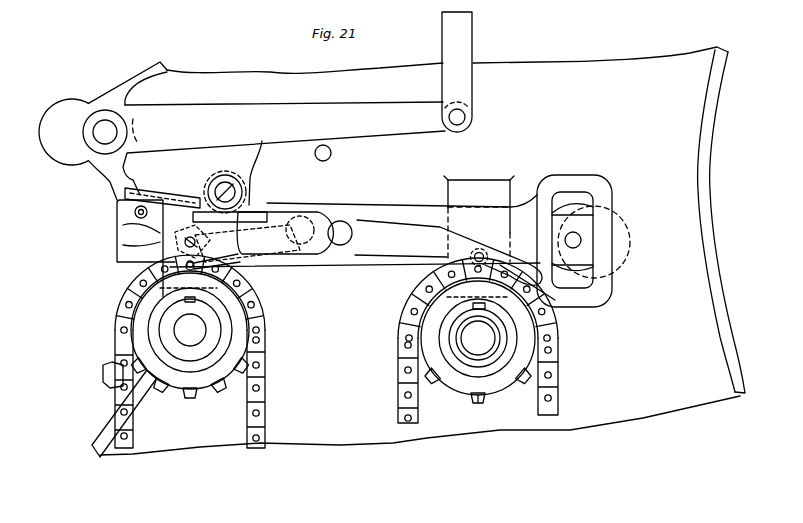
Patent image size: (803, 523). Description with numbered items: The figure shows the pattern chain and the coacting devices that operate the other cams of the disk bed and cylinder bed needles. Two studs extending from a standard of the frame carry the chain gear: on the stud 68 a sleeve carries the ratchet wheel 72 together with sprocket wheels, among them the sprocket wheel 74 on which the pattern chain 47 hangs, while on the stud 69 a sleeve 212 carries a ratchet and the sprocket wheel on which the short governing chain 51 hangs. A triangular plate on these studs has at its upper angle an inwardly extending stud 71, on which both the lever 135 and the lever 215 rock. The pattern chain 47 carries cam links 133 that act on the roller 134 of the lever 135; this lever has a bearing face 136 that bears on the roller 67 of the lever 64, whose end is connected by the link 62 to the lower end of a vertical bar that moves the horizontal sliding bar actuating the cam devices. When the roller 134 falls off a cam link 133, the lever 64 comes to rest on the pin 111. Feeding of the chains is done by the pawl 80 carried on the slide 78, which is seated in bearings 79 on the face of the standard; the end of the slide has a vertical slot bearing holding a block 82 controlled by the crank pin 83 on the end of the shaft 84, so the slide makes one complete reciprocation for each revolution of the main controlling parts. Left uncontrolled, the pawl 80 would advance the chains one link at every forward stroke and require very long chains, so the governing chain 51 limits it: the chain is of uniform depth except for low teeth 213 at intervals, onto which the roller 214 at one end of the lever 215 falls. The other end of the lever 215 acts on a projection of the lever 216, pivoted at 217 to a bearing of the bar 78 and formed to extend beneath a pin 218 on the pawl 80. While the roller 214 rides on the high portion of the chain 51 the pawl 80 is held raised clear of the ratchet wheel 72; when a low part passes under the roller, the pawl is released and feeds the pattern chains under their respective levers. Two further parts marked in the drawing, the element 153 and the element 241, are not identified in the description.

The lever 64 is at (232, 120).
The link 62 is at (465, 43).
The pin 111 is at (330, 160).
The operating roller 67 is at (246, 183).
The lever 216 is at (133, 214).
The lever 215 is at (127, 196).
The pivot 217 is at (150, 235).
The lever 135 is at (167, 247).
The roller 134 is at (180, 250).
The lever 153 is at (160, 263).
The bearing face 136 is at (253, 208).
The pin 218 is at (273, 270).
The stud 71 is at (340, 245).
The pawl 80 is at (233, 262).
The slide 78 is at (383, 212).
The roller 214 is at (430, 270).
The bearings 79 is at (480, 193).
The block 82 is at (583, 226).
The crank pin 83 is at (578, 238).
The shaft 84 is at (620, 242).
The low teeth 213 is at (540, 305).
The stud 68 is at (195, 333).
The pattern chain 47 is at (177, 356).
The cam links 133 is at (107, 370).
The sprocket wheel 74 is at (182, 373).
The ratchet wheel 72 is at (217, 392).
The stud 69 is at (482, 337).
The sleeve 212 is at (497, 350).
The pin 241 is at (508, 372).
The governing chain 51 is at (467, 340).